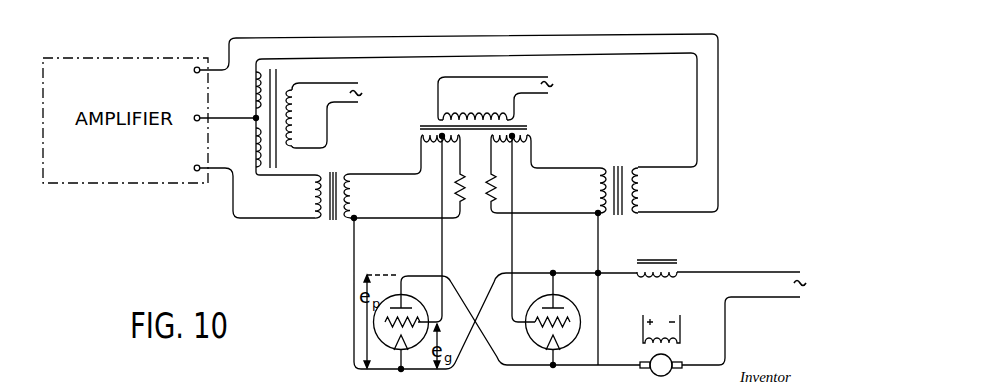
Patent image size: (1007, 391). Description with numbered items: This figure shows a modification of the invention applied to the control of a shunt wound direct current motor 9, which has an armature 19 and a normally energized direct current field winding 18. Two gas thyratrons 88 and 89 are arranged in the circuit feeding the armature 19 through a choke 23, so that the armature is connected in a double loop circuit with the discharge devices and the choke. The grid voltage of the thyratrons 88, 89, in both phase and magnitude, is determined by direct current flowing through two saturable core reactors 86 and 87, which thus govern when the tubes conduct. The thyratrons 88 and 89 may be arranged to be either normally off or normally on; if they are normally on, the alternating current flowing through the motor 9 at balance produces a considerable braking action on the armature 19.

The saturable core reactor 86 is at (332, 205).
The saturable core reactor 87 is at (619, 201).
The gas thyratron 88 is at (404, 297).
The gas thyratron 89 is at (560, 297).
The choke 23 is at (657, 257).
The shunt field winding 18 is at (664, 345).
The armature 19 is at (651, 357).
The motor 9 is at (659, 331).